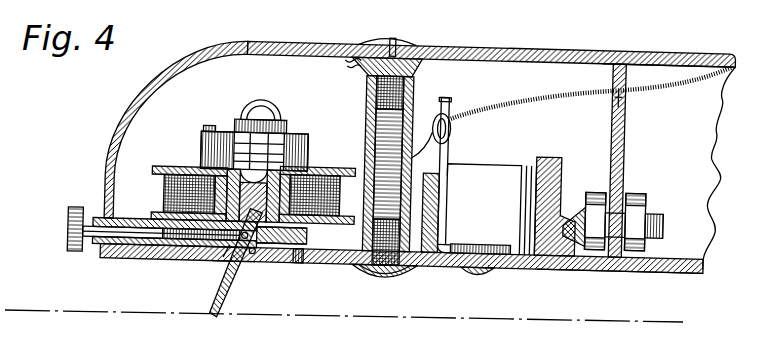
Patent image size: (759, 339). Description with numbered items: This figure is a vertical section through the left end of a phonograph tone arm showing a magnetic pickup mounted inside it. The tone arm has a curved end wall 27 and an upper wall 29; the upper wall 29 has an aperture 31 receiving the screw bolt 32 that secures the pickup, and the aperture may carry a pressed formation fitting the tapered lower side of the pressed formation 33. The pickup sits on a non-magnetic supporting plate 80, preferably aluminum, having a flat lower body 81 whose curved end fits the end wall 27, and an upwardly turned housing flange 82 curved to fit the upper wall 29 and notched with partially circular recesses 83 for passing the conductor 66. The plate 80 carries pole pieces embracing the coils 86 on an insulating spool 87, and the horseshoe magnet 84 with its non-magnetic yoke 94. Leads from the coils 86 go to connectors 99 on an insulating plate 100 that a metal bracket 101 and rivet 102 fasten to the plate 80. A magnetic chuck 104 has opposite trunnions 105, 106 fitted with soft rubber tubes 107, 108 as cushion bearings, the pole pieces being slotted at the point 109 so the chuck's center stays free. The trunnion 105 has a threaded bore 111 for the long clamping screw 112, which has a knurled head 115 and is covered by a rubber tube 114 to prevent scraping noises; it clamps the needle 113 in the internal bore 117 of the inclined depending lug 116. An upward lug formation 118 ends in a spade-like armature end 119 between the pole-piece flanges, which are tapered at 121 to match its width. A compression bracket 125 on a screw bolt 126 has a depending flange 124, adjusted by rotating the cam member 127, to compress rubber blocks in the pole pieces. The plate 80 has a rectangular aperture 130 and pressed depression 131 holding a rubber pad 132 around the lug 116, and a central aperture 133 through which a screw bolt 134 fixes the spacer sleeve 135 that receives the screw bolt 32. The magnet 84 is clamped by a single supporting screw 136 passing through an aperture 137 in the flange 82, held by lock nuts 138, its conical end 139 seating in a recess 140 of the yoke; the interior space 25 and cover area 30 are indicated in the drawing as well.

The housing interior 25 is at (553, 72).
The curved end wall 27 is at (108, 148).
The upper wall 29 is at (514, 52).
The cover 30 is at (612, 62).
The aperture 31 is at (412, 80).
The screw bolt 32 is at (412, 41).
The pressed formation 33 is at (347, 69).
The conductor 66 is at (668, 82).
The supporting plate 80 is at (350, 262).
The flat lower body 81 is at (554, 270).
The housing flange 82 is at (622, 125).
The partially circular recess 83 is at (626, 83).
The horseshoe magnet 84 is at (530, 160).
The coil 86 is at (182, 170).
The spool 87 is at (192, 170).
The yoke 94 is at (310, 150).
The connector 99 is at (448, 102).
The insulating plate 100 is at (441, 190).
The metal bracket 101 is at (515, 254).
The rivet 102 is at (481, 276).
The chuck 104 is at (299, 238).
The trunnion 105 is at (186, 250).
The trunnion 106 is at (297, 255).
The rubber tube 107 is at (205, 250).
The rubber tube 108 is at (302, 262).
The slot point 109 is at (166, 197).
The threaded bore 111 is at (219, 258).
The clamping screw 112 is at (88, 245).
The needle 113 is at (222, 272).
The rubber tube 114 is at (70, 230).
The knurled head 115 is at (76, 208).
The depending lug 116 is at (256, 256).
The internal bore 117 is at (222, 272).
The lug formation 118 is at (292, 166).
The spade-like end 119 is at (272, 138).
The tapered portion 121 is at (216, 148).
The depending flange 124 is at (234, 135).
The compression bracket 125 is at (248, 108).
The screw bolt 126 is at (271, 111).
The cam member 127 is at (214, 133).
The rectangular aperture 130 is at (259, 248).
The pressed depression 131 is at (222, 258).
The rubber pad 132 is at (302, 226).
The central aperture 133 is at (420, 268).
The screw bolt 134 is at (405, 278).
The spacer sleeve 135 is at (446, 168).
The supporting screw 136 is at (657, 234).
The aperture 137 is at (634, 197).
The lock nut 138 is at (594, 196).
The conical end 139 is at (567, 160).
The recess 140 is at (565, 235).